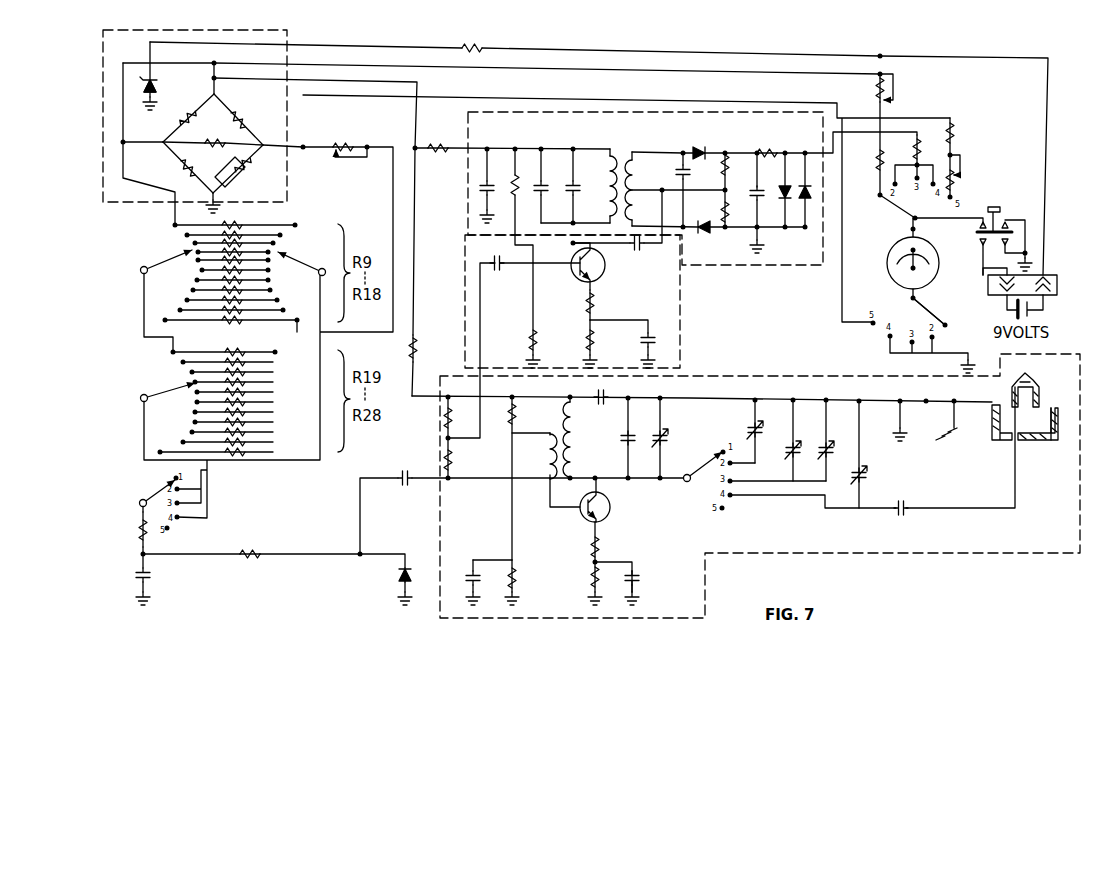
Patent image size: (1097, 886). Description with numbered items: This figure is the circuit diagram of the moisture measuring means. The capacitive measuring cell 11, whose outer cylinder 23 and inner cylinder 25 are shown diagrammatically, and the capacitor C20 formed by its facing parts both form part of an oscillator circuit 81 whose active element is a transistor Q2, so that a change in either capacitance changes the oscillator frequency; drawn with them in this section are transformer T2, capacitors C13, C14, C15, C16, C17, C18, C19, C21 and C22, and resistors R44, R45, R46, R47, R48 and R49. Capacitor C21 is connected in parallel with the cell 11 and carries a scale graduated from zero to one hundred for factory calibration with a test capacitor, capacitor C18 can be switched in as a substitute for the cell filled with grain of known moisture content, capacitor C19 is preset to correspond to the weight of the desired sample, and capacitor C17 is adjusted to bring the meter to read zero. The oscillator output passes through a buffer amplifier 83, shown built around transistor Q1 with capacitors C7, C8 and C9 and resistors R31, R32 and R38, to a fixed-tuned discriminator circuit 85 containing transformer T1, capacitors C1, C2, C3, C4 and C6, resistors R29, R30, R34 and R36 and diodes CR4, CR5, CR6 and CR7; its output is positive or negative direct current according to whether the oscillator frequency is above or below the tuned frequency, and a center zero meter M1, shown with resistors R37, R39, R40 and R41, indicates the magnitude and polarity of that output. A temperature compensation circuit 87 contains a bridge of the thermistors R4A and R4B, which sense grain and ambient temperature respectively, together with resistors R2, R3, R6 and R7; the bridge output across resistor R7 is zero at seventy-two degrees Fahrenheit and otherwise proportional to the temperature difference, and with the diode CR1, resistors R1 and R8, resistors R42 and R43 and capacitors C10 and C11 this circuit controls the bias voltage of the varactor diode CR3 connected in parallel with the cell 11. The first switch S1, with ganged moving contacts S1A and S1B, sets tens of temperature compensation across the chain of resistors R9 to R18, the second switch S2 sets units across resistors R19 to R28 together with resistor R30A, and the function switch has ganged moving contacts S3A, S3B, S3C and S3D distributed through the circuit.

The temperature compensation circuit 87 is at (287, 37).
The fixed-tuned discriminator circuit 85 is at (557, 108).
The buffer amplifier 83 is at (682, 322).
The oscillator circuit 81 is at (877, 553).
The measuring cell 11 is at (1037, 442).
The outer cylinder 23 is at (1040, 435).
The inner cylinder 25 is at (1040, 393).
The resistor R1 is at (472, 38).
The resistor R2 is at (178, 120).
The resistor R3 is at (185, 165).
The thermistor R4A is at (232, 112).
The thermistor R4B is at (245, 175).
The resistor R6 is at (224, 172).
The resistor R7 is at (208, 135).
The resistor R8 is at (338, 136).
The resistor R9 is at (240, 222).
The resistor R18 is at (232, 322).
The resistor R19 is at (240, 350).
The resistor R28 is at (237, 454).
The resistor R29 is at (440, 158).
The resistor R30 is at (513, 170).
The resistor R30A is at (140, 525).
The resistor R31 is at (530, 340).
The resistor R32 is at (587, 300).
The resistor R34 is at (725, 150).
The resistor R36 is at (770, 150).
The resistor R37 is at (895, 87).
The resistor R38 is at (586, 340).
The resistor R39 is at (913, 157).
The resistor R40 is at (953, 142).
The resistor R41 is at (962, 167).
The resistor R42 is at (246, 552).
The resistor R43 is at (415, 340).
The resistor R44 is at (440, 415).
The resistor R45 is at (443, 462).
The resistor R46 is at (510, 425).
The resistor R47 is at (515, 583).
The resistor R48 is at (598, 545).
The resistor R49 is at (590, 576).
The capacitor C1 is at (480, 194).
The capacitor C2 is at (543, 180).
The capacitor C3 is at (575, 180).
The capacitor C4 is at (676, 172).
The capacitor C6 is at (759, 185).
The capacitor C7 is at (497, 272).
The capacitor C8 is at (640, 250).
The capacitor C9 is at (622, 344).
The capacitor C10 is at (150, 573).
The capacitor C11 is at (404, 485).
The capacitor C13 is at (473, 573).
The capacitor C14 is at (640, 580).
The capacitor C15 is at (622, 440).
The capacitor C16 is at (606, 392).
The capacitor C17 is at (668, 436).
The capacitor C18 is at (748, 428).
The capacitor C19 is at (787, 455).
The capacitor C20 is at (832, 455).
The capacitor C21 is at (866, 477).
The capacitor C22 is at (912, 503).
The diode CR1 is at (160, 90).
The varactor diode CR3 is at (398, 580).
The diode CR4 is at (698, 148).
The diode CR5 is at (702, 233).
The diode CR6 is at (792, 190).
The diode CR7 is at (808, 200).
The transistor Q1 is at (605, 270).
The transistor Q2 is at (612, 507).
The transformer T1 is at (623, 165).
The transformer T2 is at (560, 432).
The center zero meter M1 is at (934, 246).
The first switch S1 is at (158, 243).
The moving contact S1A is at (175, 262).
The moving contact S1B is at (315, 260).
The second switch S2 is at (172, 388).
The moving contact S3A is at (160, 492).
The moving contact S3B is at (704, 487).
The moving contact S3C is at (902, 210).
The moving contact S3D is at (925, 306).